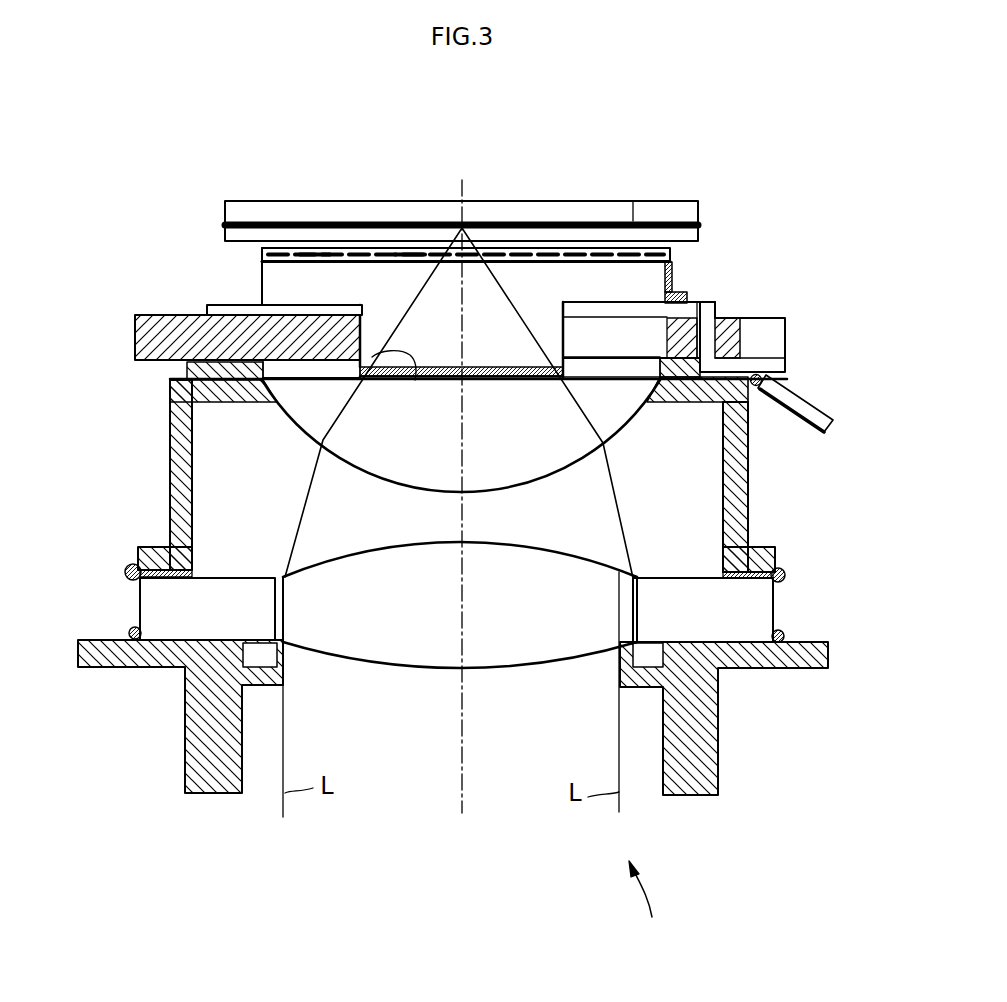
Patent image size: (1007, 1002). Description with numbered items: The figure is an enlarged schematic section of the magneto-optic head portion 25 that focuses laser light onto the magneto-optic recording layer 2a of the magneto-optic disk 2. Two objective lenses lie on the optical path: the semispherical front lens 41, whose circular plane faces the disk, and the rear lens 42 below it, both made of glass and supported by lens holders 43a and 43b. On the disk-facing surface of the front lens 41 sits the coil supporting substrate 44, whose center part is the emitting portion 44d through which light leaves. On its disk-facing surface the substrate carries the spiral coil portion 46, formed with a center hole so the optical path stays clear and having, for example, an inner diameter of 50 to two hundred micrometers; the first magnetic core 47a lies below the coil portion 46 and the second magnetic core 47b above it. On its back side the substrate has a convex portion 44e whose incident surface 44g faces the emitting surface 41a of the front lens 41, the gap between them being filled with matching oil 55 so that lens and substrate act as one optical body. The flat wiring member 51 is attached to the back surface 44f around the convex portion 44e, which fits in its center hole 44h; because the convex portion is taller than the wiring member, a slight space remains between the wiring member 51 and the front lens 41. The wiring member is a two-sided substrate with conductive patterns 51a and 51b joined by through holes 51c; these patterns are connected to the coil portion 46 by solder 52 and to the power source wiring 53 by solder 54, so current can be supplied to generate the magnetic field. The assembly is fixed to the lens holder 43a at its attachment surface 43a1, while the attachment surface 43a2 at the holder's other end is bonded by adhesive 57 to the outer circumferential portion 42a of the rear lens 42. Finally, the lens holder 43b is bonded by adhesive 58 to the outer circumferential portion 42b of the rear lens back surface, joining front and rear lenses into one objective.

The magneto-optic disk 2 is at (580, 202).
The magneto-optic recording layer 2a is at (633, 222).
The magneto-optic head portion 25 is at (637, 958).
The front lens 41 is at (583, 450).
The emitting surface 41a is at (477, 377).
The rear lens 42 is at (390, 665).
The outer circumferential portion 42a is at (775, 590).
The outer circumferential portion 42b is at (747, 668).
The lens holder 43a is at (178, 510).
The attachment surface 43a1 is at (170, 393).
The attachment surface 43a2 is at (150, 547).
The lens holder 43b is at (707, 767).
The coil supporting substrate 44 is at (260, 252).
The emitting portion 44d is at (489, 249).
The convex portion 44e is at (617, 430).
The back surface 44f is at (260, 282).
The incident surface 44g is at (372, 357).
The center hole 44h is at (370, 262).
The coil portion 46 is at (303, 252).
The first magnetic core 47a is at (410, 252).
The second magnetic core 47b is at (322, 252).
The adhesive 50 is at (672, 262).
The wiring member 51 is at (152, 332).
The conductive pattern 51a is at (205, 312).
The conductive pattern 51b is at (187, 368).
The through hole 51c is at (737, 317).
The solder 52 is at (678, 292).
The power source wiring 53 is at (797, 393).
The solder 54 is at (758, 372).
The matching oil 55 is at (415, 380).
The adhesive 57 is at (126, 572).
The adhesive 58 is at (130, 630).